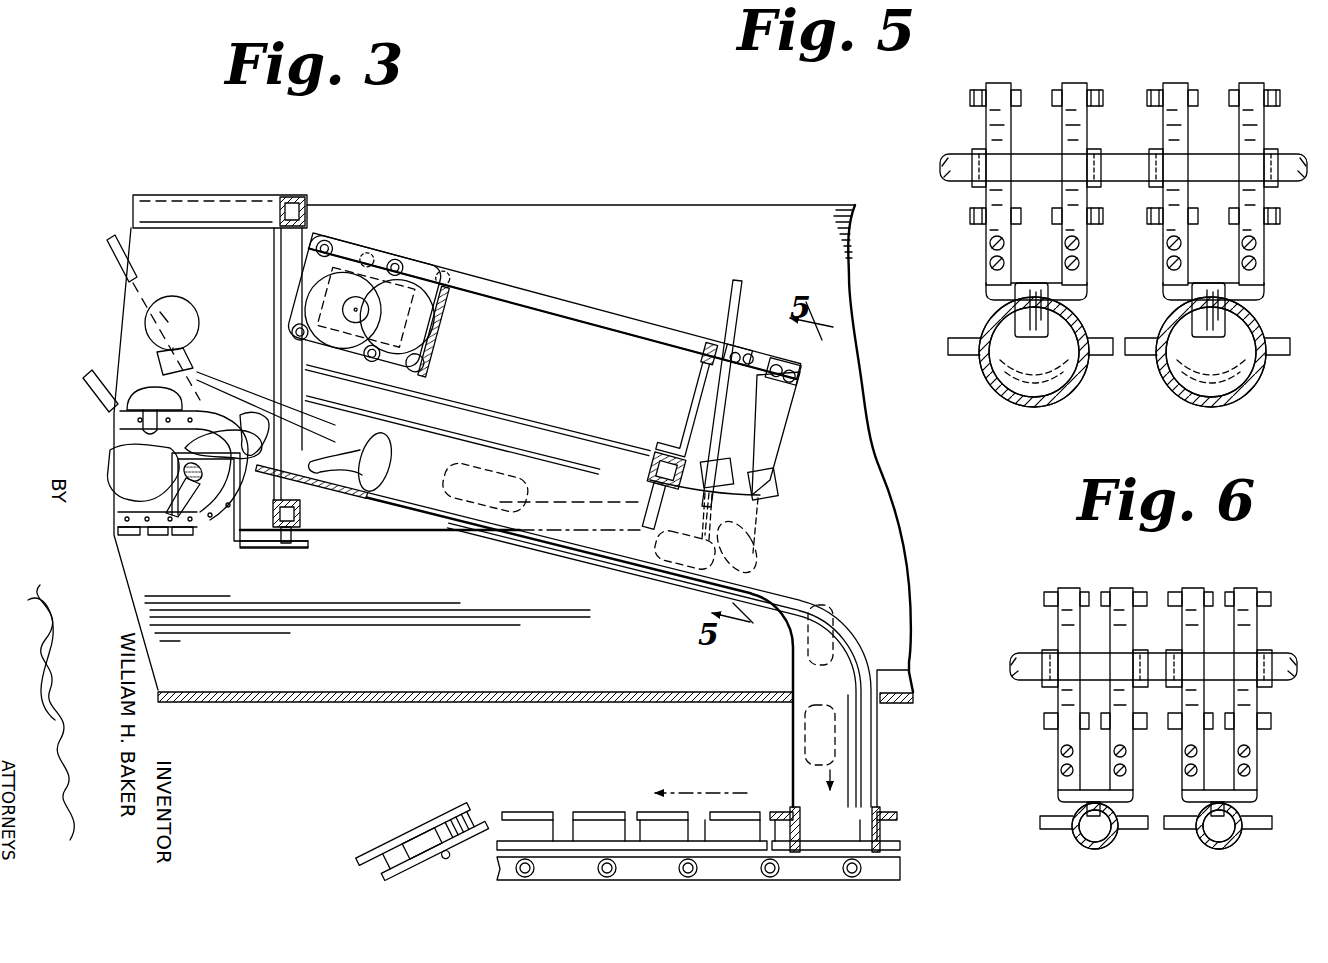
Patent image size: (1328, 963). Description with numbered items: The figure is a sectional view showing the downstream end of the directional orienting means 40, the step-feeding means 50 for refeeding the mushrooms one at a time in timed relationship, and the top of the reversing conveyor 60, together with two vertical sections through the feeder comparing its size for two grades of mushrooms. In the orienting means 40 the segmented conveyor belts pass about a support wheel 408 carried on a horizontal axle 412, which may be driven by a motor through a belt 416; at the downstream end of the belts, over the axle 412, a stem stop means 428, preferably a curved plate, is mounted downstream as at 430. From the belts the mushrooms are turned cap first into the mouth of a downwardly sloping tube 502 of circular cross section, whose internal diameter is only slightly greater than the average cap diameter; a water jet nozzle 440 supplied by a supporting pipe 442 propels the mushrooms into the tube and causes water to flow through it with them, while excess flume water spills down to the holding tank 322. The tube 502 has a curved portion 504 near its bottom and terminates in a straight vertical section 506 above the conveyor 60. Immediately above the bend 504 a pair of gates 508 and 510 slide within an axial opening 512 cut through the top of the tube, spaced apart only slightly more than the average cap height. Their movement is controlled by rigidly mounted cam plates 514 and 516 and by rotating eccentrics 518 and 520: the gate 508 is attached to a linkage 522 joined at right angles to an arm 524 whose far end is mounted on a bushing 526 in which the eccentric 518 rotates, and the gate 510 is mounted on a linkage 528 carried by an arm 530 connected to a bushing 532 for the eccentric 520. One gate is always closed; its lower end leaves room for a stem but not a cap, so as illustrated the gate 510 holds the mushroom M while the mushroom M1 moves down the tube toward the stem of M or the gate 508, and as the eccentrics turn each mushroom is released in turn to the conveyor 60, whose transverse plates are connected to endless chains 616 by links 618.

In FIG. 3, the directional orienting means 40 is at (80, 320).
In FIG. 3, the means for receiving and refeeding the mushrooms 50 is at (462, 617).
In FIG. 3, the reversing conveyor 60 is at (628, 827).
In FIG. 3, the holding tank 322 is at (200, 690).
In FIG. 3, the support wheel 408 is at (205, 503).
In FIG. 3, the axle 412 is at (170, 527).
In FIG. 3, the belt 416 is at (97, 402).
In FIG. 3, the stem stop means 428 is at (158, 492).
In FIG. 3, the mounting 430 is at (285, 552).
In FIG. 3, the water jet nozzle 440 is at (180, 362).
In FIG. 3, the supporting pipe 442 is at (180, 310).
In FIG. 3, the downwardly sloping tube 502 is at (600, 540).
In FIG. 5, the downwardly sloping tube 502 is at (995, 385).
In FIG. 6, the downwardly sloping tube 502 is at (1078, 832).
In FIG. 3, the curved portion 504 is at (830, 587).
In FIG. 3, the straight vertical section 506 is at (850, 790).
In FIG. 3, the gate 508 is at (300, 512).
In FIG. 5, the gate 508 is at (990, 237).
In FIG. 3, the gate 510 is at (767, 514).
In FIG. 5, the gate 510 is at (1017, 310).
In FIG. 3, the axial opening 512 is at (808, 540).
In FIG. 5, the axial opening 512 is at (995, 285).
In FIG. 3, the cam plate 514 is at (707, 365).
In FIG. 3, the cam plate 516 is at (455, 318).
In FIG. 3, the eccentric 518 is at (342, 278).
In FIG. 3, the eccentric 520 is at (410, 290).
In FIG. 3, the linkage 522 is at (733, 387).
In FIG. 5, the linkage 522 is at (1005, 131).
In FIG. 3, the arm 524 is at (607, 320).
In FIG. 3, the bushing 526 is at (313, 270).
In FIG. 3, the linkage 528 is at (780, 413).
In FIG. 5, the linkage 528 is at (1073, 138).
In FIG. 3, the arm 530 is at (770, 362).
In FIG. 3, the bushing 532 is at (448, 365).
In FIG. 3, the endless chain 616 is at (620, 860).
In FIG. 3, the link 618 is at (525, 856).
In FIG. 3, the mushroom M is at (713, 573).
In FIG. 3, the mushroom M1 is at (490, 513).